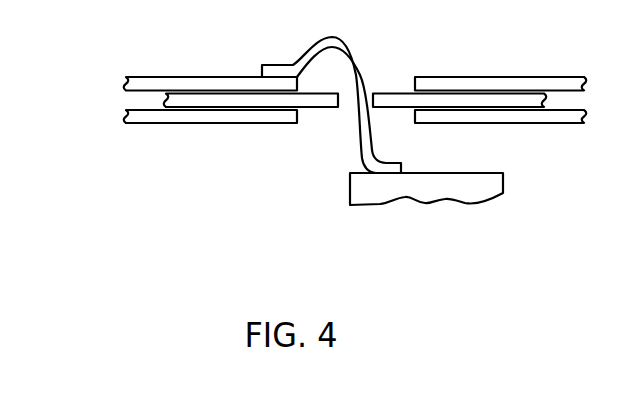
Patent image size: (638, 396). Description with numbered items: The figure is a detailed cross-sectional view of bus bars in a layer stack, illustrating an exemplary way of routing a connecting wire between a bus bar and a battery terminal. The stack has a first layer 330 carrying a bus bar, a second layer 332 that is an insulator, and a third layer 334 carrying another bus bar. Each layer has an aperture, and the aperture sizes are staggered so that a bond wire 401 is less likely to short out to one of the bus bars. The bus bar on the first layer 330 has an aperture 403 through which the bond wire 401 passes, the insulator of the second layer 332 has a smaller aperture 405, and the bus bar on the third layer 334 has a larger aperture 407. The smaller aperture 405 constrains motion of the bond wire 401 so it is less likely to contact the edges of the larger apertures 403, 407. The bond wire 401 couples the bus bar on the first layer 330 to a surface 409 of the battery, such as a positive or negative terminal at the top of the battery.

The first layer 330 is at (111, 85).
The second layer 332 is at (146, 100).
The third layer 334 is at (110, 130).
The bond wire 401 is at (326, 40).
The aperture 403 is at (394, 69).
The smaller aperture 405 is at (370, 80).
The larger aperture 407 is at (383, 128).
The surface of the battery 409 is at (362, 192).